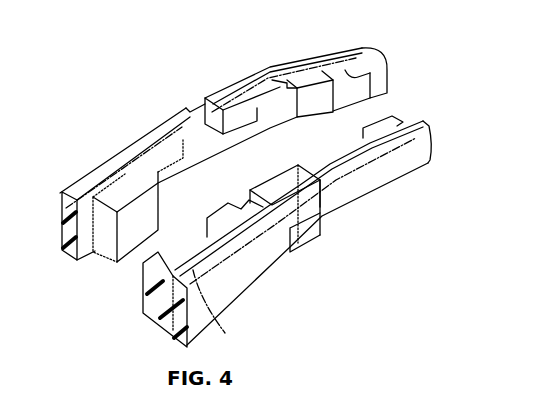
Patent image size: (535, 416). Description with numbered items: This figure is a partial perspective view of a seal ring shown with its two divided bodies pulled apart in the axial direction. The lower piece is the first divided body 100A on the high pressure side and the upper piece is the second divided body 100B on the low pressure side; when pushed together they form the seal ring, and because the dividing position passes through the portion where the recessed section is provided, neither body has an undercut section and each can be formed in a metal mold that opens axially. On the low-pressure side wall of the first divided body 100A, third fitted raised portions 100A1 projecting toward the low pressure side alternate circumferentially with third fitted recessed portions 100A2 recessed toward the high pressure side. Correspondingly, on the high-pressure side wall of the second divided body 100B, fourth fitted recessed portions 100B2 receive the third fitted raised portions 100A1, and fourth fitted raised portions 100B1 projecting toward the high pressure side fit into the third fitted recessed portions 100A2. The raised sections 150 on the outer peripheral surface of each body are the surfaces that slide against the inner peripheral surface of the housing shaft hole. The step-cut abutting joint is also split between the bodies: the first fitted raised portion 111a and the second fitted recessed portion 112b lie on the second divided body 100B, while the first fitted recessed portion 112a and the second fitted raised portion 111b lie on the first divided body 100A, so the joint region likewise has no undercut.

The first divided body 100A is at (283, 290).
The third fitted raised portion 100A1 is at (223, 218).
The third fitted recessed portion 100A2 is at (212, 250).
The second divided body 100B is at (146, 109).
The fourth fitted raised portion 100B1 is at (322, 96).
The fourth fitted recessed portion 100B2 is at (362, 66).
The first fitted raised portion 111a is at (228, 98).
The second fitted raised portion 111b is at (322, 232).
The first fitted recessed portion 112a is at (328, 190).
The second fitted recessed portion 112b is at (209, 118).
The raised section 150 is at (72, 182).